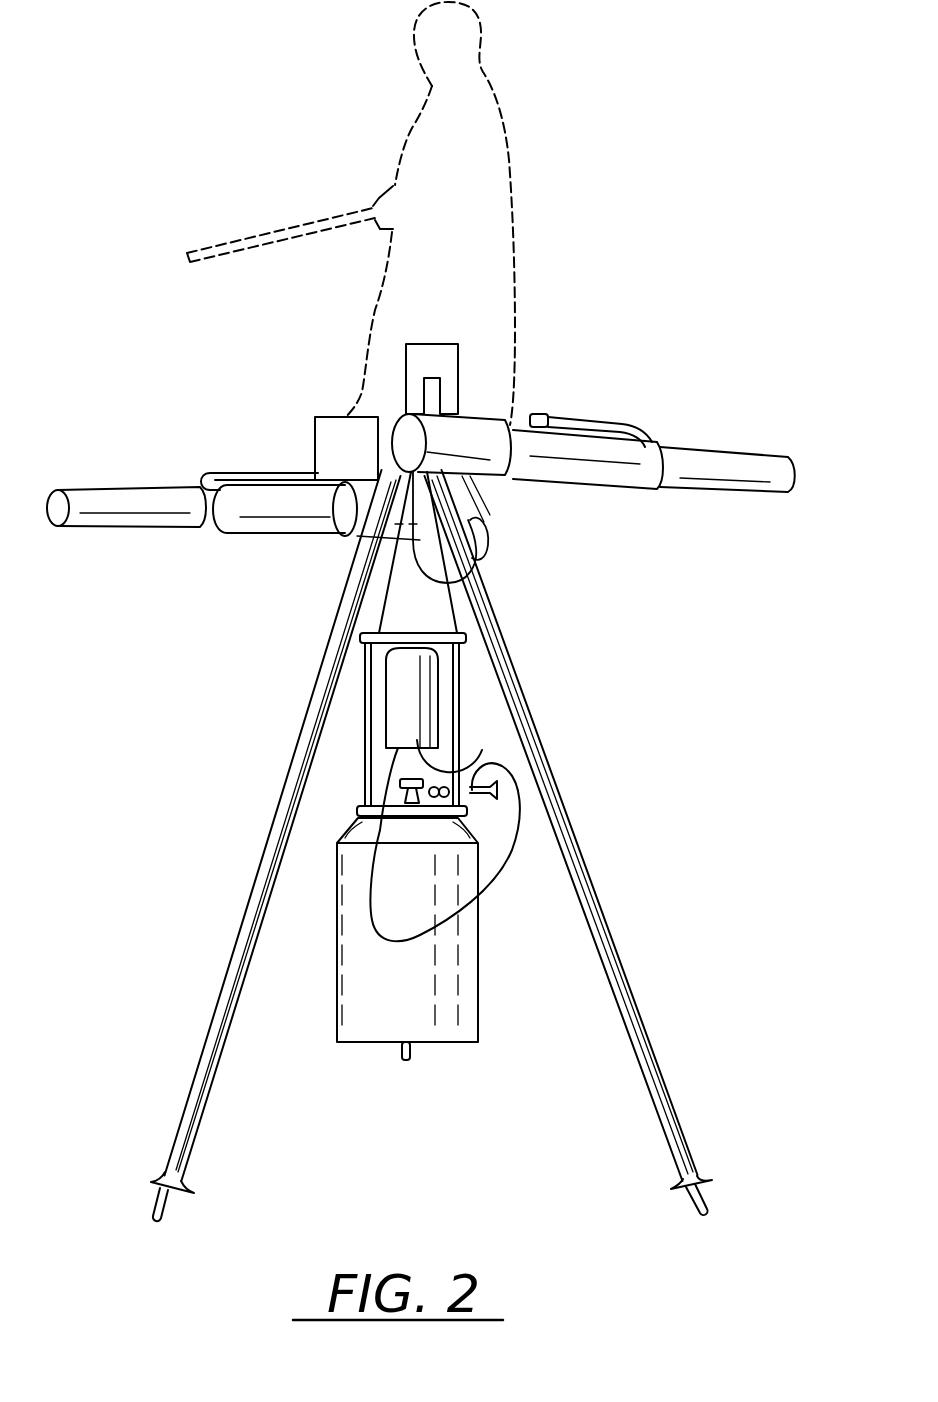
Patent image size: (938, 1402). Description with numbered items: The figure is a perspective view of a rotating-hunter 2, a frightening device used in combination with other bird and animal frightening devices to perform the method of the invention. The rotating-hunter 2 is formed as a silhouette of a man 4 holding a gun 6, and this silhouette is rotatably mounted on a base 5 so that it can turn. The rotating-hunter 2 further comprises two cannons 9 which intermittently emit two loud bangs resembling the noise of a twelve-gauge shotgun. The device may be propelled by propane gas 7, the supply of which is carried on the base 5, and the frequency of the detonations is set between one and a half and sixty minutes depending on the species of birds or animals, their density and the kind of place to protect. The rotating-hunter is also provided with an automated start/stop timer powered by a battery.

The rotating-hunter 2 is at (617, 130).
The silhouette of a man 4 is at (515, 222).
The base 5 is at (622, 686).
The gun 6 is at (222, 243).
The propane gas 7 is at (470, 838).
The cannons 9 is at (135, 492).